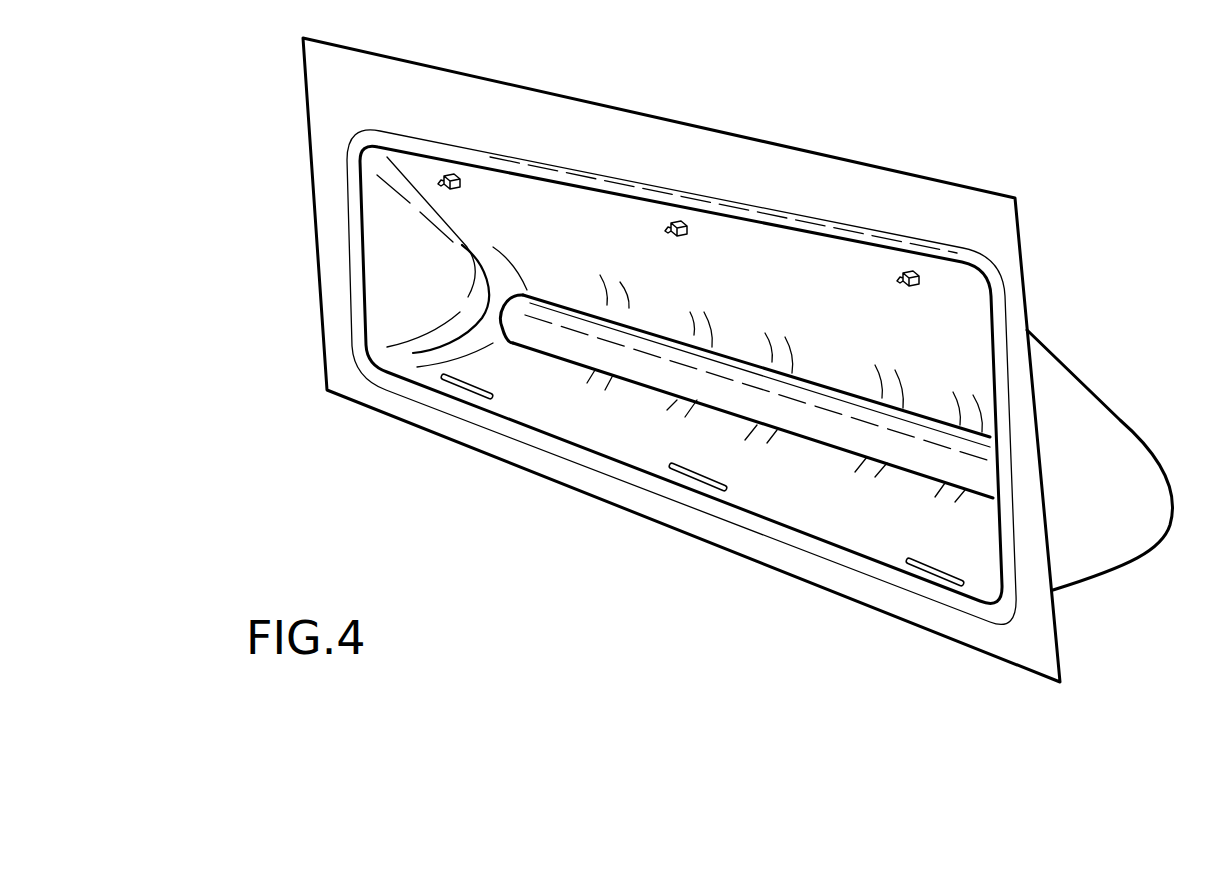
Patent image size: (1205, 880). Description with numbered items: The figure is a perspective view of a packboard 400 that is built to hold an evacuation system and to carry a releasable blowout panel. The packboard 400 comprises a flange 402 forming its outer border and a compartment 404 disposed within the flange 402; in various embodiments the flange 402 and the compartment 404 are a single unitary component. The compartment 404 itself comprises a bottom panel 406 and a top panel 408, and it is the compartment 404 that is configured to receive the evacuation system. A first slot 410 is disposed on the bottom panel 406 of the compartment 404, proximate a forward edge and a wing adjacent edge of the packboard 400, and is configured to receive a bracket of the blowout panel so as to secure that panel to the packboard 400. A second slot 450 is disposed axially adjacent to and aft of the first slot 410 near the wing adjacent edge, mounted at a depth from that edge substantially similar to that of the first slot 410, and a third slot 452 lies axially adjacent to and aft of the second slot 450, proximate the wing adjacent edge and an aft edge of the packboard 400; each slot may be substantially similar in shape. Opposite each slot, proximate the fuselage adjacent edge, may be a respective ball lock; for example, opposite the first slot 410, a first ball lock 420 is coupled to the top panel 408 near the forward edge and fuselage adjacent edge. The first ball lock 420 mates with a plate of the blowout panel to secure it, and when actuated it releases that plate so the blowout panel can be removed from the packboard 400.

The packboard 400 is at (240, 134).
The flange 402 is at (325, 262).
The compartment 404 is at (410, 315).
The bottom panel 406 is at (540, 408).
The top panel 408 is at (603, 230).
The first slot 410 is at (933, 575).
The first ball lock 420 is at (907, 267).
The second slot 450 is at (700, 480).
The third slot 452 is at (444, 384).